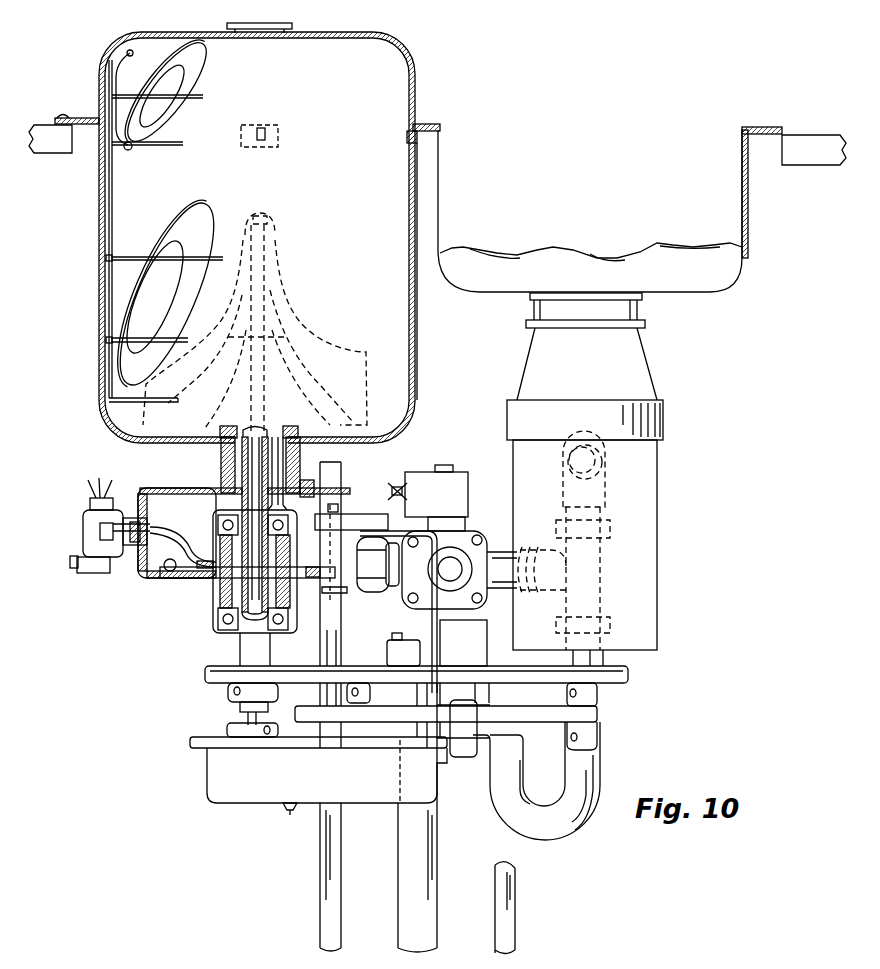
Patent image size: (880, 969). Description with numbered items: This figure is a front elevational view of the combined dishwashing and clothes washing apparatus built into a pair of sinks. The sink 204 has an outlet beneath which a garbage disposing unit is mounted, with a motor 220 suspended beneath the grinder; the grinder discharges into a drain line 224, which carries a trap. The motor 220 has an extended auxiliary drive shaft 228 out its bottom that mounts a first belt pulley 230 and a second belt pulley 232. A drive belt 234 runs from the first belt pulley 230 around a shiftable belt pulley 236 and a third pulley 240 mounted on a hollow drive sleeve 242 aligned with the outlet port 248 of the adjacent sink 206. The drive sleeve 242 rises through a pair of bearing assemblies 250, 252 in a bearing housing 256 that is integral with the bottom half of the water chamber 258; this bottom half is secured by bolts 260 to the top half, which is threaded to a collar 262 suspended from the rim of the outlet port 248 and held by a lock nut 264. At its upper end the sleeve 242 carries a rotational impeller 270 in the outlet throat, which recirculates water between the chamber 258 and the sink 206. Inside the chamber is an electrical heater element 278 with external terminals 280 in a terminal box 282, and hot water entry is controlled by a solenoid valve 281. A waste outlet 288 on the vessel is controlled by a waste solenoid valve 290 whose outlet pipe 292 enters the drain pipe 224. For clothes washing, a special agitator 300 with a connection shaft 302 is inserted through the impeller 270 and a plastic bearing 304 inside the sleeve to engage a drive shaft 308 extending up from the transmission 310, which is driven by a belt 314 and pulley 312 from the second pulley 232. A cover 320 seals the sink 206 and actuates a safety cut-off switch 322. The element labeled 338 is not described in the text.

The cover 320 is at (408, 66).
The safety cut-off switch 322 is at (262, 127).
The sink 206 is at (137, 201).
The special agitator 300 is at (272, 254).
The terminal box 282 is at (112, 290).
The external terminals 280 is at (127, 372).
The plastic bearing 304 is at (248, 432).
The rotational impeller 270 is at (283, 432).
The outlet port 248 is at (218, 448).
The threaded collar 262 is at (212, 471).
The connection shaft 302 is at (252, 475).
The solenoid valve 281 is at (105, 577).
The electrical heater element 278 is at (150, 578).
The bearing assembly 252 is at (230, 540).
The bearing housing 256 is at (247, 596).
The drive shaft 308 is at (232, 608).
The bearing assembly 250 is at (285, 620).
The hollow drive sleeve 242 is at (243, 653).
The third pulley 240 is at (207, 682).
The transmission 310 is at (263, 793).
The drive belt 234 is at (347, 667).
The pulley 312 is at (373, 706).
The belt 314 is at (537, 718).
The drain block 338 is at (470, 631).
The shiftable belt pulley 236 is at (500, 661).
The water chamber 258 is at (356, 578).
The waste outlet 288 is at (377, 588).
The outlet pipe 292 is at (498, 552).
The waste solenoid valve 290 is at (457, 489).
The bolts 260 is at (372, 503).
The lock nut 264 is at (307, 457).
The extended auxiliary drive shaft 228 is at (588, 657).
The first belt pulley 230 is at (630, 685).
The second belt pulley 232 is at (597, 727).
The sink 204 is at (733, 273).
The motor 220 is at (643, 475).
The drain line 224 is at (588, 602).